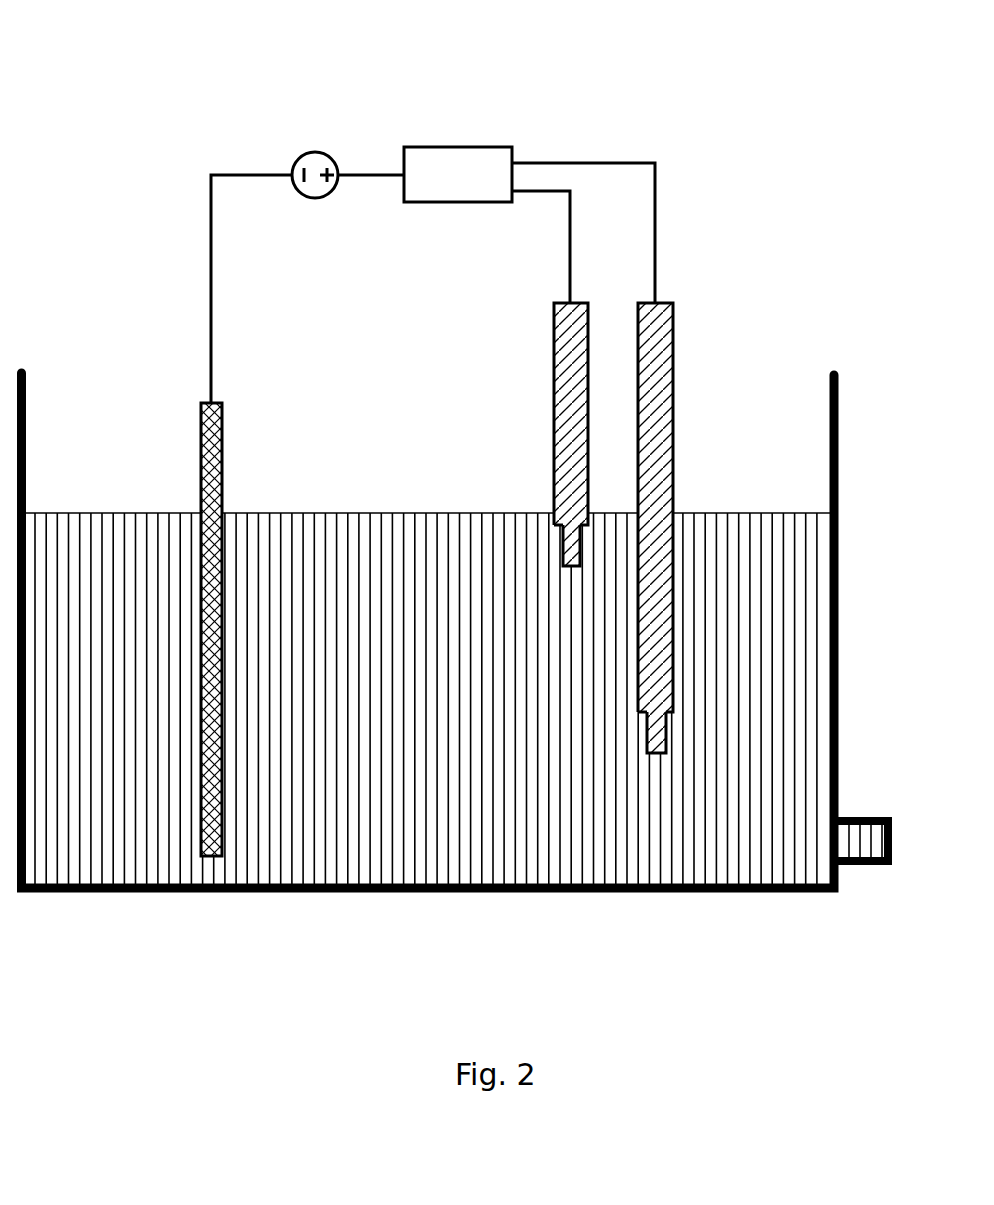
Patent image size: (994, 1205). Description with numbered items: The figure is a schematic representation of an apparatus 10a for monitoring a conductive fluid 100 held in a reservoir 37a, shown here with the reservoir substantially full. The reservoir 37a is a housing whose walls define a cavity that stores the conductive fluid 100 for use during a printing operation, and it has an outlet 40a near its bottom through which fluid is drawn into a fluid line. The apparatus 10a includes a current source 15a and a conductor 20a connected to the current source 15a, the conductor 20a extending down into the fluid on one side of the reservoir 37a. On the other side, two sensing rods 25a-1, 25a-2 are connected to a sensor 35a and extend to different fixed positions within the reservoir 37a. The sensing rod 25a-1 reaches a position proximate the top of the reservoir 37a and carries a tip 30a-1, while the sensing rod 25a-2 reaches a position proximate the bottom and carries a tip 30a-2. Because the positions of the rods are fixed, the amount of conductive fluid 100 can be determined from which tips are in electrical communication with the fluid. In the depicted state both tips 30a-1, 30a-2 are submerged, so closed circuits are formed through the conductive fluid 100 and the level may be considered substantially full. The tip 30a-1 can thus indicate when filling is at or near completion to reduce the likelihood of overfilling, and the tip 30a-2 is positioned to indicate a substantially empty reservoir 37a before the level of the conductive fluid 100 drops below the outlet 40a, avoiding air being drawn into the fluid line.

The apparatus 10a is at (180, 76).
The current source 15a is at (311, 150).
The conductor 20a is at (202, 422).
The sensing rod 25a-1 is at (553, 418).
The sensing rod 25a-2 is at (676, 345).
The tip 30a-1 is at (562, 552).
The tip 30a-2 is at (665, 740).
The sensor 35a is at (529, 225).
The reservoir 37a is at (841, 410).
The outlet 40a is at (857, 865).
The conductive fluid 100 is at (317, 533).